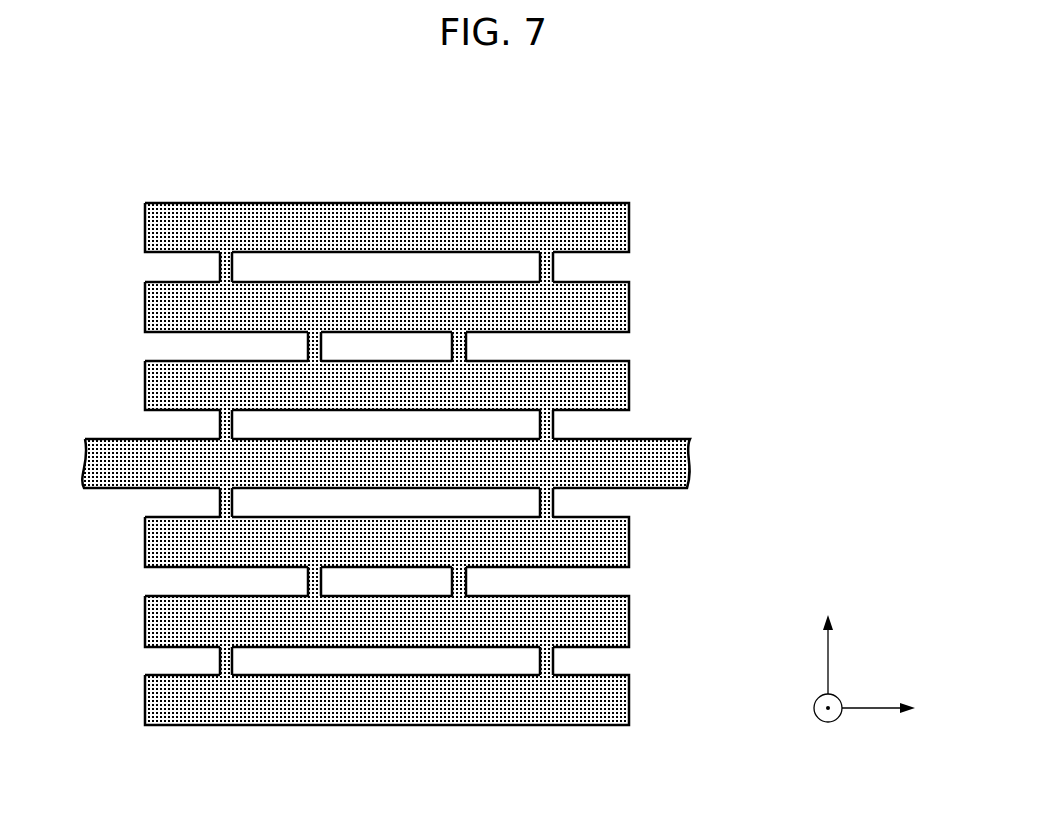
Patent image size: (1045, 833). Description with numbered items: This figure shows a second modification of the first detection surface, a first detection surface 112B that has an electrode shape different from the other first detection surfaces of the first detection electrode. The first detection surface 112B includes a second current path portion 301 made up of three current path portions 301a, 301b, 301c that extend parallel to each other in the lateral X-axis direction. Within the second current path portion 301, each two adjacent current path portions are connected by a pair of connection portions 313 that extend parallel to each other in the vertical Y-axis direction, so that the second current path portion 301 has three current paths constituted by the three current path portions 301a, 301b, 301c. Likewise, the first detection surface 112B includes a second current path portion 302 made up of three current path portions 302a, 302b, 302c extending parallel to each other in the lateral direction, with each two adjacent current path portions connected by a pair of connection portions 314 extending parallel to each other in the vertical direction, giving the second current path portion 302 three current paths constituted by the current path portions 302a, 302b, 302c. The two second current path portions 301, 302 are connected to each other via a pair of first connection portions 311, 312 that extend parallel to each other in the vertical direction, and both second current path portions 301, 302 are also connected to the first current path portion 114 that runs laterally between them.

The first detection surface 112B is at (628, 178).
The second current path portion 301 is at (735, 205).
The current path portion 301a is at (630, 228).
The current path portion 301b is at (630, 307).
The current path portion 301c is at (630, 387).
The second current path portion 302 is at (735, 518).
The current path portion 302a is at (630, 543).
The current path portion 302b is at (630, 623).
The current path portion 302c is at (630, 703).
The first connection portion 311 is at (215, 432).
The first connection portion 312 is at (556, 418).
The connection portion 313 is at (232, 266).
The connection portion 314 is at (232, 660).
The first current path portion 114 is at (94, 491).